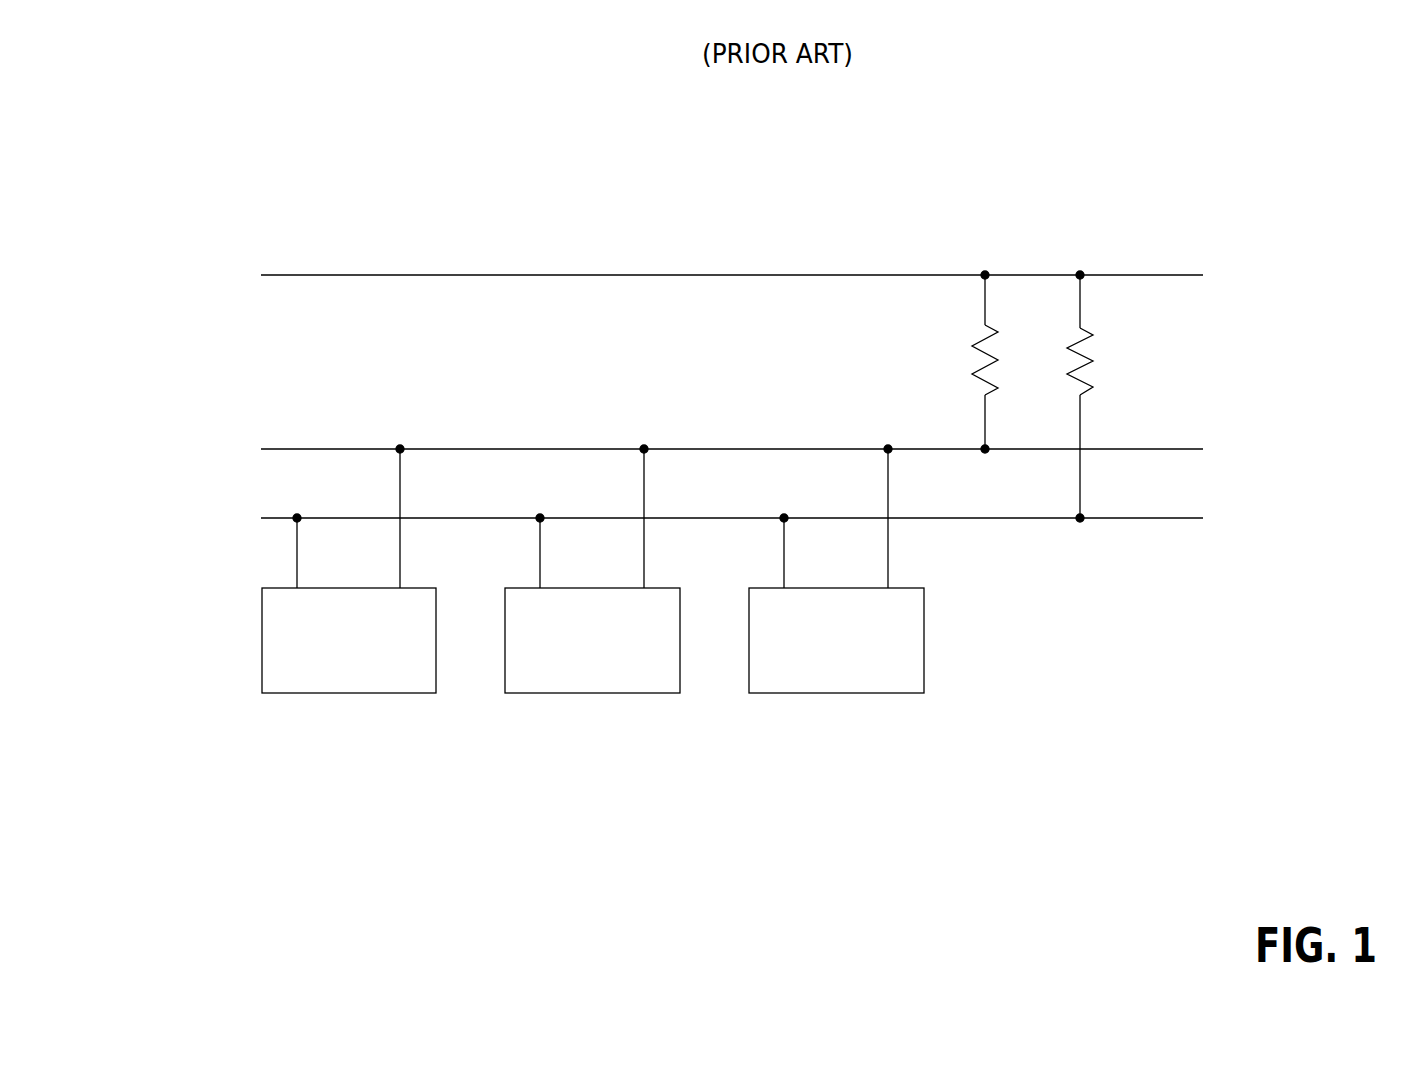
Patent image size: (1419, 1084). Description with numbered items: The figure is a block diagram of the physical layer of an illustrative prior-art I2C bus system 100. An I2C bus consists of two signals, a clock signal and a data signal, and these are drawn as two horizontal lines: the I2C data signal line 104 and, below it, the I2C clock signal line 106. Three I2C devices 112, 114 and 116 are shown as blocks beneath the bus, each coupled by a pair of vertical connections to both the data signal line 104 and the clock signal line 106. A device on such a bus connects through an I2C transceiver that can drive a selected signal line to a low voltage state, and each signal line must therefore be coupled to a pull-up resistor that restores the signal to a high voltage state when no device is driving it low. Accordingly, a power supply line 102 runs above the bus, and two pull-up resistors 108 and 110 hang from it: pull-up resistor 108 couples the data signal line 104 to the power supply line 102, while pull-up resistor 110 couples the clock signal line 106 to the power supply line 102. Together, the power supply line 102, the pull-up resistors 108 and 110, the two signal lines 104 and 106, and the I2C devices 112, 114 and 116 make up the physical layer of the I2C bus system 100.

The I2C bus system 100 is at (182, 97).
The power supply line 102 is at (1168, 275).
The I2C data signal line 104 is at (1168, 449).
The I2C clock signal line 106 is at (1168, 518).
The pull-up resistor 108 is at (962, 373).
The pull-up resistor 110 is at (1135, 374).
The I2C device 112 is at (367, 637).
The I2C device 114 is at (611, 637).
The I2C device 116 is at (854, 637).